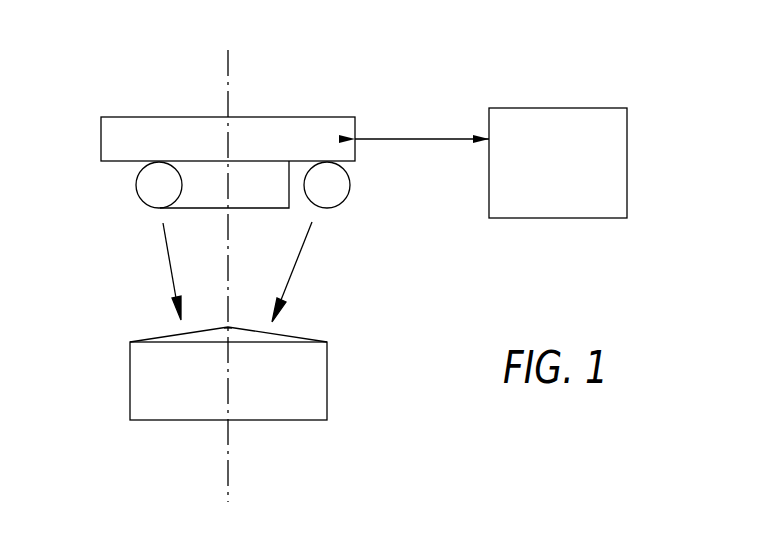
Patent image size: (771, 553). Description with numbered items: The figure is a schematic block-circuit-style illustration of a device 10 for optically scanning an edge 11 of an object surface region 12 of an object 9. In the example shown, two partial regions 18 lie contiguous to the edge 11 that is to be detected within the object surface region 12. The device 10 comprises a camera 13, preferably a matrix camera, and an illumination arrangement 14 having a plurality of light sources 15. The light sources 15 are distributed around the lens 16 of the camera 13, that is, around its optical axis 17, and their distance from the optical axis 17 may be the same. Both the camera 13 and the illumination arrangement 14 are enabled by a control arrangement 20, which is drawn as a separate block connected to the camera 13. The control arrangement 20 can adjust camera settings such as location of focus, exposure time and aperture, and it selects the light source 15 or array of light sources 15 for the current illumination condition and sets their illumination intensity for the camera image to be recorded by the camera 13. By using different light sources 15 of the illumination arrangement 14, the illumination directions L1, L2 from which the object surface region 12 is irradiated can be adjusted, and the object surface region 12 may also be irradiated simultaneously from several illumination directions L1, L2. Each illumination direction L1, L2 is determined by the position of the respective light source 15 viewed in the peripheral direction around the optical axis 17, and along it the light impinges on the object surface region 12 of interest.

The object 9 is at (275, 390).
The device 10 is at (622, 87).
The edge 11 is at (228, 327).
The object surface region 12 is at (203, 380).
The camera 13 is at (277, 133).
The illumination arrangement 14 is at (213, 161).
The light sources 15 is at (148, 188).
The lens 16 is at (210, 180).
The optical axis 17 is at (230, 458).
The partial regions 18 is at (157, 336).
The control arrangement 20 is at (588, 165).
The illumination direction L1 is at (167, 260).
The illumination direction L2 is at (292, 272).